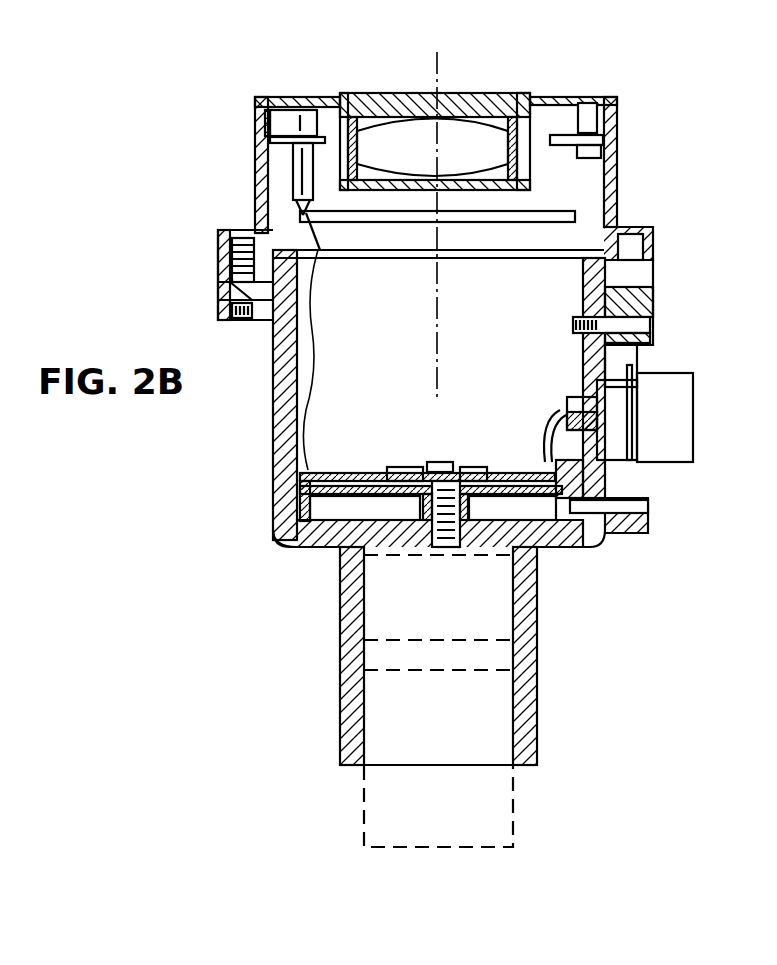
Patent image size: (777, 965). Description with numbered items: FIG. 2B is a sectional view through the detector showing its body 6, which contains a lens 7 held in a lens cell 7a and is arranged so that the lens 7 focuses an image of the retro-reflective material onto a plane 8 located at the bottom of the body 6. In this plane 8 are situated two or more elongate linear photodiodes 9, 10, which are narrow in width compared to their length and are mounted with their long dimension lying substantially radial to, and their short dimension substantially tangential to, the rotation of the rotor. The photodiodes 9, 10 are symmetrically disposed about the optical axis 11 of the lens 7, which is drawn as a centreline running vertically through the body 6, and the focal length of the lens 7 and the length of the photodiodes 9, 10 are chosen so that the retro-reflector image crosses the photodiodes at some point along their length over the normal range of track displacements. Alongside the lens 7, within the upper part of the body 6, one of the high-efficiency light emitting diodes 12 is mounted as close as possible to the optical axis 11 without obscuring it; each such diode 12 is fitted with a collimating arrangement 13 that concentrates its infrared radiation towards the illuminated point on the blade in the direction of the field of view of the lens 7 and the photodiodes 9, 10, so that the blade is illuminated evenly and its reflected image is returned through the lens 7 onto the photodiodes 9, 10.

The body 6 is at (617, 162).
The lens 7 is at (498, 152).
The lens cell 7a is at (495, 107).
The plane 8 is at (300, 487).
The elongate linear photodiode 9 is at (410, 473).
The elongate linear photodiode 10 is at (474, 470).
The optical axis 11 is at (442, 78).
The light emitting diode 12 is at (300, 177).
The collimating arrangement 13 is at (288, 104).